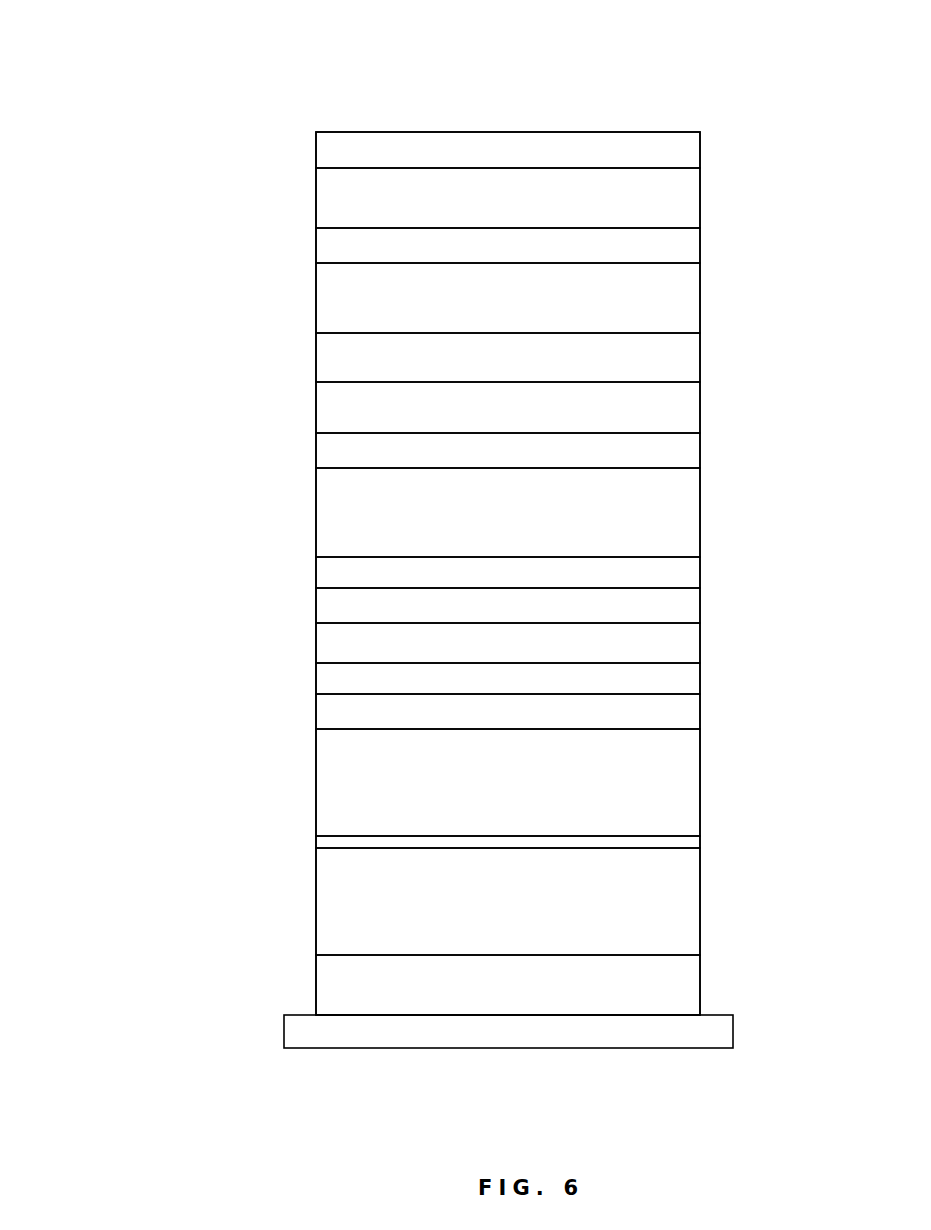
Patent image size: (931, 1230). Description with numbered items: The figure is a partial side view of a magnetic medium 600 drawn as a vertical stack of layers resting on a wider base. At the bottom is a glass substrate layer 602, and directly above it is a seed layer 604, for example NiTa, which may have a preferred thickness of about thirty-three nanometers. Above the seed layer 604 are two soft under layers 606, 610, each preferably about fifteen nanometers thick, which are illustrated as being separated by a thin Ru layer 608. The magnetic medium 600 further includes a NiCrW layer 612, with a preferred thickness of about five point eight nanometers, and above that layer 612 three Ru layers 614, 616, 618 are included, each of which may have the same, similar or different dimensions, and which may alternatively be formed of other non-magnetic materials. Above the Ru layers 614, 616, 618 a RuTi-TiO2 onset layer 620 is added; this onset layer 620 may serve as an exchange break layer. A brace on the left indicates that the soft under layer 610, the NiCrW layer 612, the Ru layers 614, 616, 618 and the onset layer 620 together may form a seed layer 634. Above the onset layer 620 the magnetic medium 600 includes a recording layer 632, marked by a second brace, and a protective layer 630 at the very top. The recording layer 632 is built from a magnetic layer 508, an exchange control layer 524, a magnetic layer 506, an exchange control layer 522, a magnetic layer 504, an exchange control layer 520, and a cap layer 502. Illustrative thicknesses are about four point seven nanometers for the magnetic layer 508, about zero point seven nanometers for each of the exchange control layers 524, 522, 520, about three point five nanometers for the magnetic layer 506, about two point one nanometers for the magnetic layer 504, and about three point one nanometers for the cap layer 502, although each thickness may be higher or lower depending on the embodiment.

The magnetic medium 600 is at (146, 78).
The glass substrate layer 602 is at (284, 1031).
The seed layer 604 is at (700, 988).
The soft under layer 606 is at (316, 902).
The Ru layer 608 is at (700, 843).
The soft under layer 610 is at (316, 787).
The NiCrW layer 612 is at (700, 713).
The Ru layer 614 is at (316, 679).
The Ru layer 616 is at (700, 645).
The Ru layer 618 is at (316, 607).
The RuTi-TiO2 onset layer 620 is at (700, 575).
The cap layer 502 is at (316, 201).
The magnetic layer 504 is at (316, 297).
The magnetic layer 506 is at (316, 407).
The magnetic layer 508 is at (316, 511).
The exchange control layer 520 is at (700, 248).
The exchange control layer 522 is at (700, 360).
The exchange control layer 524 is at (700, 453).
The protective layer 630 is at (700, 152).
The recording layer 632 is at (168, 173).
The seed layer 634 is at (172, 557).